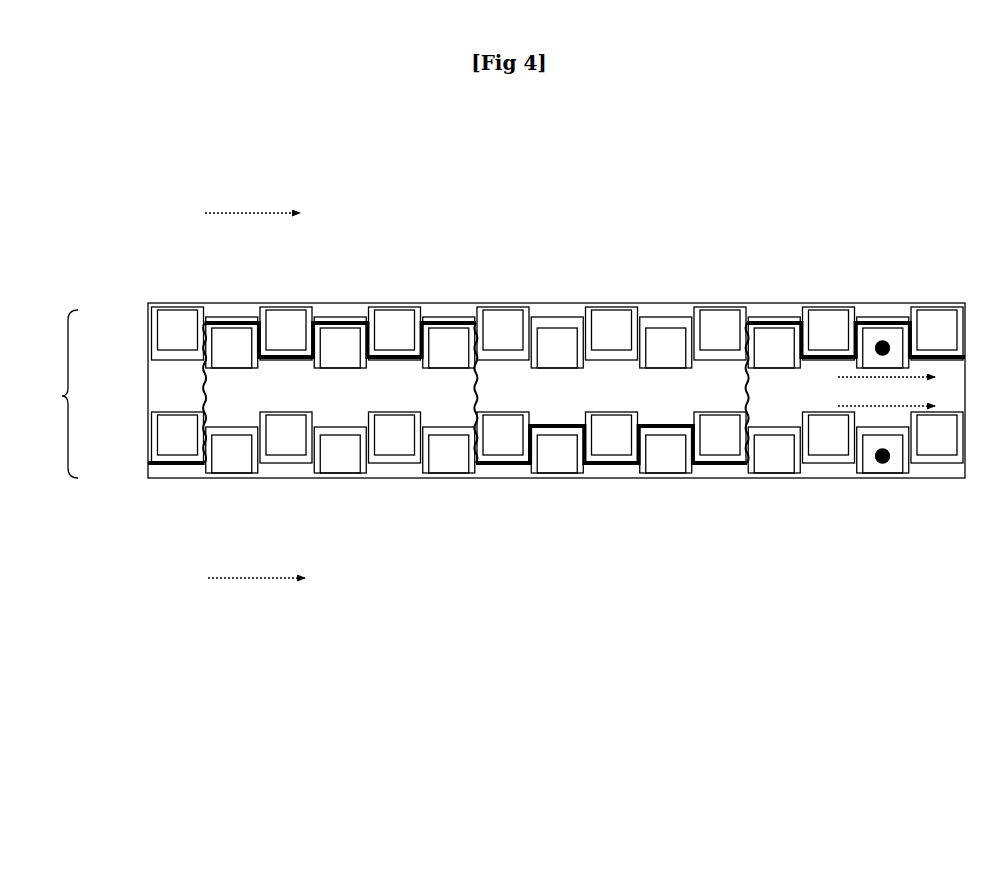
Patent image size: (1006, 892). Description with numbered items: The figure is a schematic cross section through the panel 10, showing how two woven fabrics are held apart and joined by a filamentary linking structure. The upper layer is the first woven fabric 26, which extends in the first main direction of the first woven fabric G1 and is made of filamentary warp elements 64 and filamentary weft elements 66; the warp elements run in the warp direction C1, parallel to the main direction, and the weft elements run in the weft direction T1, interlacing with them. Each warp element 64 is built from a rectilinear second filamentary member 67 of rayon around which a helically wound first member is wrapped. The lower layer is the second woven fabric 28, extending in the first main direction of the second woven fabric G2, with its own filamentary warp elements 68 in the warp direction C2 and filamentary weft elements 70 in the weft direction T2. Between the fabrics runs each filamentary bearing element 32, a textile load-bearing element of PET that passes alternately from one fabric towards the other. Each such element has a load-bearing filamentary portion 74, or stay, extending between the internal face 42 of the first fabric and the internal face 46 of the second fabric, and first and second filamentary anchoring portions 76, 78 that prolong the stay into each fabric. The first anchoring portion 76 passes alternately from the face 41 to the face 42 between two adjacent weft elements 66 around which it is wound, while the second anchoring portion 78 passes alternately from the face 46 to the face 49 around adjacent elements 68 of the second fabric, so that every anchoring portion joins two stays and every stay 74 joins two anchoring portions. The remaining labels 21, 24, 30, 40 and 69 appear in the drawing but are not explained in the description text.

The panel 10 is at (59, 394).
The substrate film 21 is at (724, 198).
The first connecting portion 24 is at (482, 390).
The first woven fabric 26 is at (146, 338).
The second woven fabric 28 is at (146, 437).
The second conductive line 30 is at (520, 464).
The filamentary bearing element 32 is at (754, 378).
The terminal pad region 40 is at (863, 468).
The face 41 is at (612, 312).
The internal face 42 is at (353, 369).
The internal face 46 is at (280, 414).
The face 49 is at (662, 475).
The filamentary warp element 64 is at (204, 302).
The filamentary weft element 66 is at (583, 330).
The second filamentary member 67 is at (608, 338).
The filamentary warp element 68 is at (397, 322).
The insulating frame 69 is at (478, 465).
The filamentary weft element 70 is at (395, 455).
The load-bearing filamentary portion 74 is at (752, 405).
The first filamentary anchoring portion 76 is at (349, 320).
The second filamentary anchoring portion 78 is at (612, 465).
The weft direction T1 is at (886, 342).
The weft direction T2 is at (888, 462).
The warp direction C1 is at (899, 378).
The warp direction C2 is at (899, 407).
The first main direction of the first woven fabric G1 is at (252, 204).
The first main direction of the second woven fabric G2 is at (256, 590).